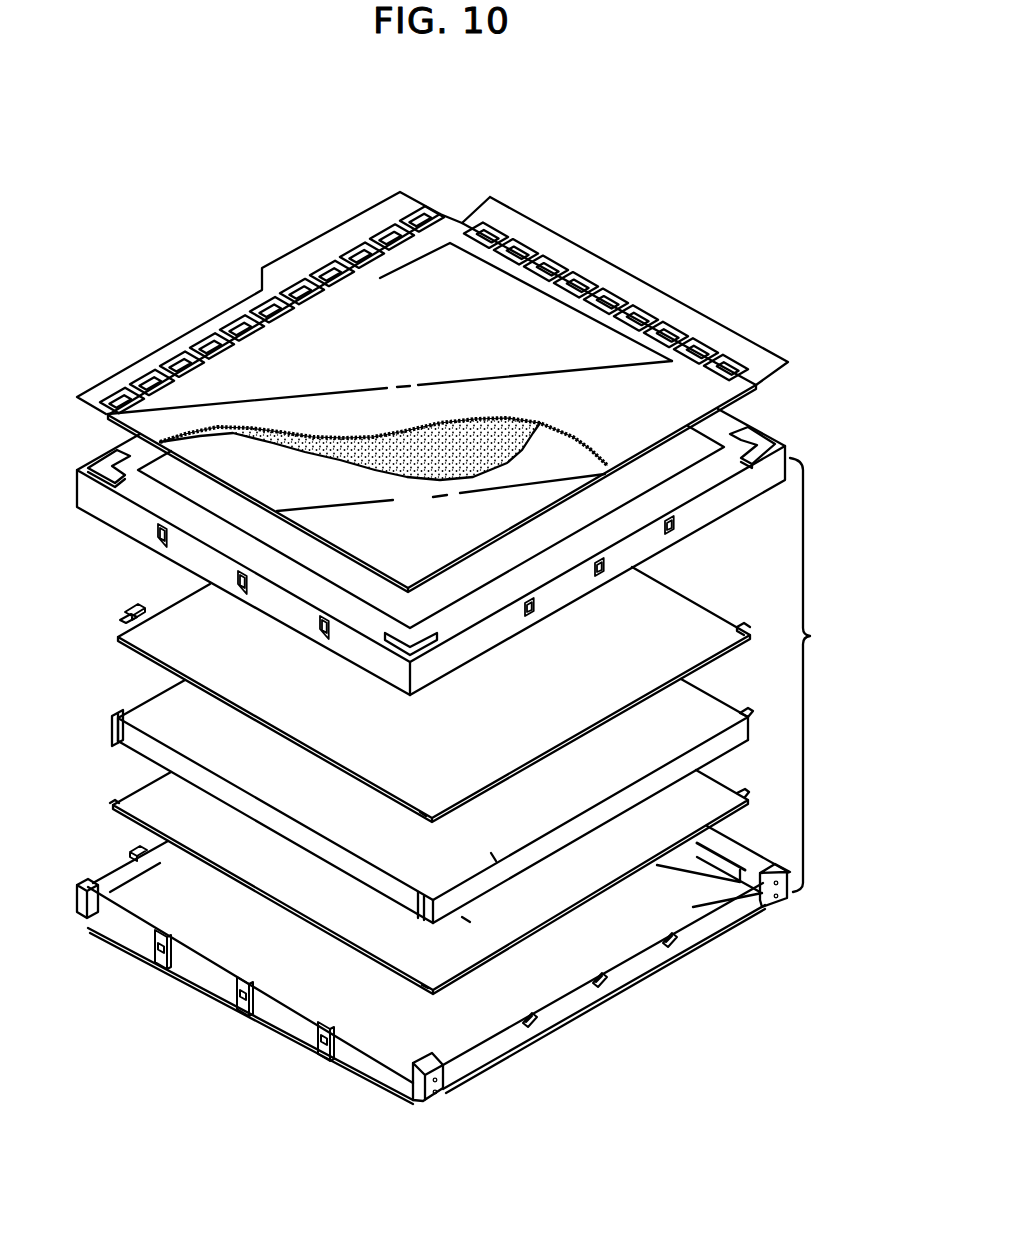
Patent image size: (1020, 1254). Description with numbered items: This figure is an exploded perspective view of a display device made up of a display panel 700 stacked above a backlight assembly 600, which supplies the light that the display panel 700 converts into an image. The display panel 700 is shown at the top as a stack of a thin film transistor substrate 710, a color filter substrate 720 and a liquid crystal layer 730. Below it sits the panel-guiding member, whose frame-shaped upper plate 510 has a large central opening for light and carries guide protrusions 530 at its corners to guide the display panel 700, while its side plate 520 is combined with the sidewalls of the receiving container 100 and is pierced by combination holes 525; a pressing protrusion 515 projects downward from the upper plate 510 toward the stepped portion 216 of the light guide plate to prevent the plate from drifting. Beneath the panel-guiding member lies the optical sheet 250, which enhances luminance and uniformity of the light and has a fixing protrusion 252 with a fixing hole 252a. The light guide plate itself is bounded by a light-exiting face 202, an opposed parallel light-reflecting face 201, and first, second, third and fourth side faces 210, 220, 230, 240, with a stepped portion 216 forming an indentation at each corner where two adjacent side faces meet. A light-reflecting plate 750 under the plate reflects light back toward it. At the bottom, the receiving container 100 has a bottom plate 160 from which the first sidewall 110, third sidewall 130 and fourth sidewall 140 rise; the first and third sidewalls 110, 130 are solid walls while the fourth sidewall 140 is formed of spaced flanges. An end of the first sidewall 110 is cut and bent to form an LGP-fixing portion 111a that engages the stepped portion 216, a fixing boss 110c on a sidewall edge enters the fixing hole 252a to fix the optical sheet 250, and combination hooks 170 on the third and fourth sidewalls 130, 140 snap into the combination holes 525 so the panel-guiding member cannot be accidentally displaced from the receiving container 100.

The display panel 700 is at (628, 257).
The color filter substrate 720 is at (573, 346).
The thin film transistor (TFT) substrate 710 is at (489, 527).
The liquid crystal layer 730 is at (520, 426).
The upper plate 510 is at (77, 486).
The side plate 520 is at (686, 522).
The guide protrusion 530 is at (115, 452).
The pressing protrusion 515 is at (147, 483).
The combination hole 525 is at (599, 577).
The backlight assembly 600 is at (818, 675).
The optical sheet 250 is at (113, 637).
The fixing protrusion 252 is at (124, 610).
The fixing hole 252a is at (121, 619).
The first side face 210 is at (112, 718).
The second side face 220 is at (750, 712).
The stepped portion 216 is at (112, 740).
The fourth side face 240 is at (364, 878).
The third side face 230 is at (579, 826).
The light-exiting face 202 is at (494, 856).
The light-reflecting face 201 is at (466, 903).
The light-reflecting plate 750 is at (112, 812).
The receiving container 100 is at (672, 990).
The first sidewall 110 is at (147, 874).
The LGP-fixing portion 111a is at (128, 879).
The fixing boss 110c is at (131, 852).
The fourth sidewall 140 is at (247, 999).
The third sidewall 130 is at (584, 994).
The combination hook 170 is at (537, 1021).
The bottom plate 160 is at (678, 912).